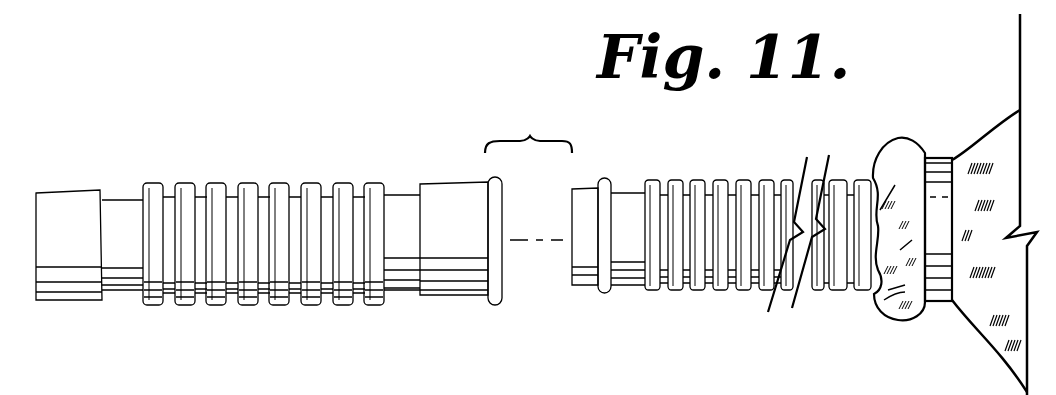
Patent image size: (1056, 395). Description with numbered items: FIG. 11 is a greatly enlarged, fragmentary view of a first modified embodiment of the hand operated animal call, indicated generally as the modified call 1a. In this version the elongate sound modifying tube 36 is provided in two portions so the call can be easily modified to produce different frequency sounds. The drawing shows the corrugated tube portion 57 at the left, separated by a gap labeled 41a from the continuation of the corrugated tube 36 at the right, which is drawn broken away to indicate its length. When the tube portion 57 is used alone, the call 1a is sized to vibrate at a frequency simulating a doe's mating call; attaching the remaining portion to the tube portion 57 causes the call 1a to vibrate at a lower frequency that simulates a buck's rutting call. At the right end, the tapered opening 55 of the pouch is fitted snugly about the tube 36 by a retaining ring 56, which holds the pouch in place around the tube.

The tube portion 57 is at (230, 180).
The hose length 41a is at (528, 125).
The elongate sound modifying tube 36 is at (748, 176).
The modified call 1a is at (814, 303).
The tapered opening 55 is at (882, 289).
The retaining ring 56 is at (940, 155).